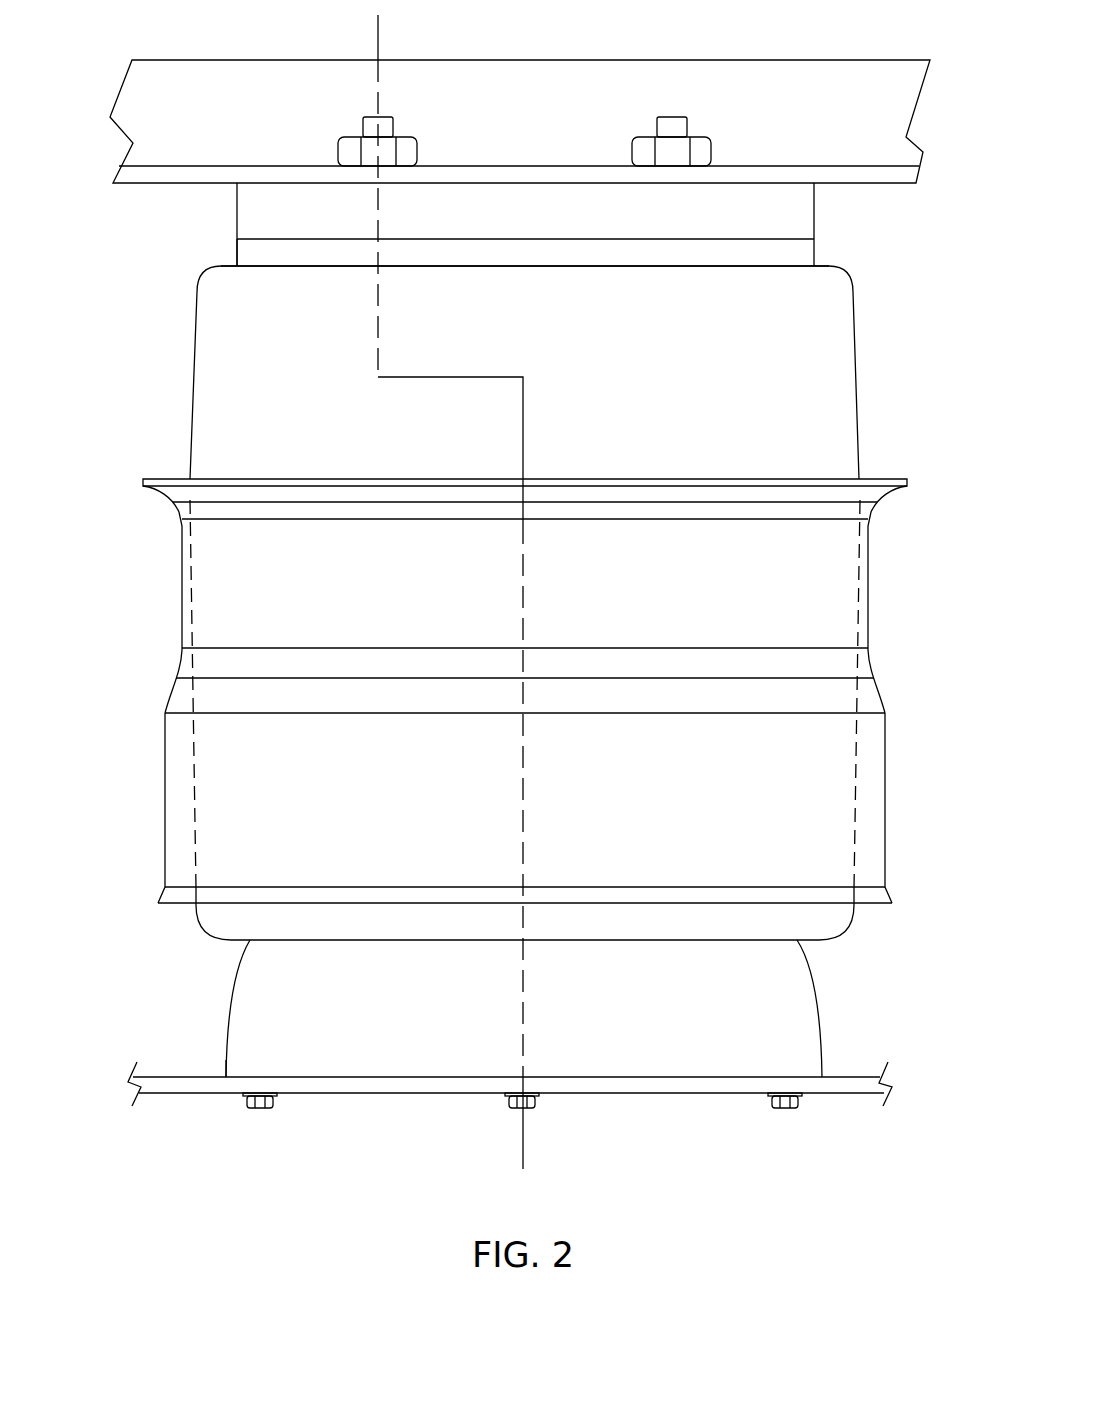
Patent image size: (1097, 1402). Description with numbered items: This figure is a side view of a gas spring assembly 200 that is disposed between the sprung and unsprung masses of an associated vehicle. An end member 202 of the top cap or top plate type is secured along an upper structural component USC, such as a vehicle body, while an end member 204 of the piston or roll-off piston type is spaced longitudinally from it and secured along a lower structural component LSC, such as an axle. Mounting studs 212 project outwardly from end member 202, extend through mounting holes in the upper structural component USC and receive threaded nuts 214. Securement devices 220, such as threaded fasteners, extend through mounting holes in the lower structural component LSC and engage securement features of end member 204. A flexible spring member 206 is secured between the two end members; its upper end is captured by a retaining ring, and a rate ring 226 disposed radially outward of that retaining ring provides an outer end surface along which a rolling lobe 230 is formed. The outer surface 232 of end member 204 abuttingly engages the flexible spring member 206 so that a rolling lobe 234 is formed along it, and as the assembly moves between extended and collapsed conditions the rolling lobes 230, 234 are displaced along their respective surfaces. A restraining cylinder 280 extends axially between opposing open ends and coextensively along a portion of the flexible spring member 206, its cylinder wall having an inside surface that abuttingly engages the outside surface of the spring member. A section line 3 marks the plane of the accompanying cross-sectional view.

The gas spring assembly 200 is at (928, 270).
The end member 202 is at (272, 187).
The end member 204 is at (828, 998).
The flexible spring member 206 is at (863, 348).
The mounting studs 212 is at (388, 128).
The threaded nuts 214 is at (410, 153).
The securement devices 220 is at (260, 1112).
The rate ring 226 is at (233, 248).
The rolling lobe 230 is at (211, 270).
The outer surface 232 is at (228, 1008).
The rolling lobe 234 is at (231, 940).
The restraining cylinder 280 is at (160, 739).
The section line 3- 3 is at (378, 15).
The upper structural component USC is at (848, 84).
The lower structural component LSC is at (183, 1087).